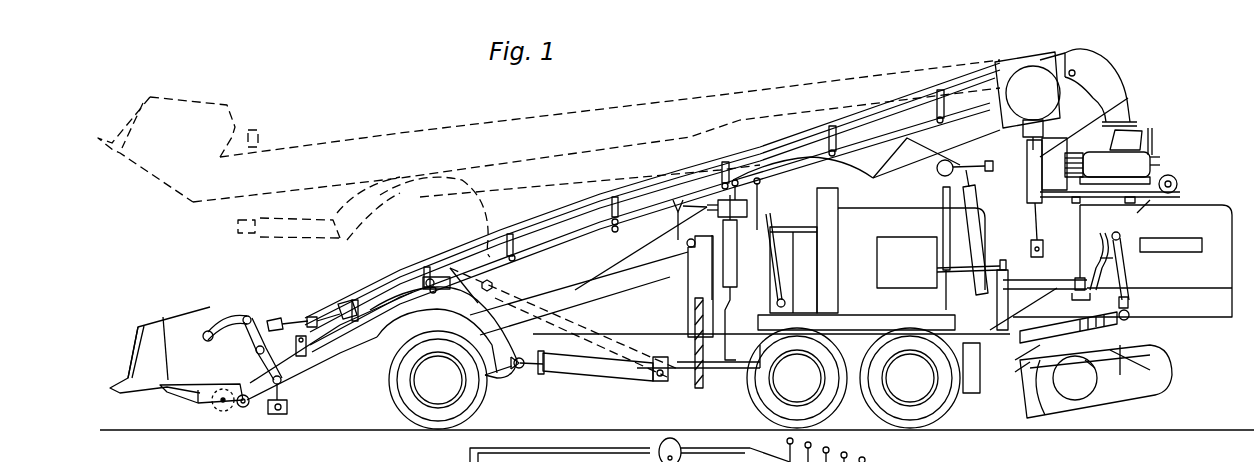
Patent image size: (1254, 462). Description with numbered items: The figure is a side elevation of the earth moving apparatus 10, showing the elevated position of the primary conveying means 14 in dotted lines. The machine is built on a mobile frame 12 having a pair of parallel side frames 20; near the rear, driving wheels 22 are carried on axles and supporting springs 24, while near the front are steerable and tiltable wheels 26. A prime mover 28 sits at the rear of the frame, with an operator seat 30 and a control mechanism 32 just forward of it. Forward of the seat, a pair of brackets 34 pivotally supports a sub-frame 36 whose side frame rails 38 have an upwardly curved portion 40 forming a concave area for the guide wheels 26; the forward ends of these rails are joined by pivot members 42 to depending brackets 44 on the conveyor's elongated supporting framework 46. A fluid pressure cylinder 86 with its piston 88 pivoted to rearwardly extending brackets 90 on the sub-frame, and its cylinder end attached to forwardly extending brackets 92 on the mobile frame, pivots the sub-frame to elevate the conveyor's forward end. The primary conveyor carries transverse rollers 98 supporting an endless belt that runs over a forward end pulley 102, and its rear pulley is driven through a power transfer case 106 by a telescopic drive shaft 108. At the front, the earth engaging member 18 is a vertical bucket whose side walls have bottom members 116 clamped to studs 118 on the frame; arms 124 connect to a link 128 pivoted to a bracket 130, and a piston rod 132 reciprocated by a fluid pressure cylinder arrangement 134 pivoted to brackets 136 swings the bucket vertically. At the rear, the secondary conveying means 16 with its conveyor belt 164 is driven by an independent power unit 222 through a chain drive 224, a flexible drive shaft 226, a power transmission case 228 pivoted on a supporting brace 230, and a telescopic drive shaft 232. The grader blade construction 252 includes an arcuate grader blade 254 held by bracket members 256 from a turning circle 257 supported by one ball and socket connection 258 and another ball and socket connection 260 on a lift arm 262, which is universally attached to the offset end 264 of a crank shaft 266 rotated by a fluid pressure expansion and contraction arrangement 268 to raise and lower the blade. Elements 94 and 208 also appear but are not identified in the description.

The earth moving apparatus 10 is at (590, 383).
The mobile frame 12 is at (738, 375).
The primary conveying means 14 is at (548, 212).
The secondary conveying means 16 is at (1158, 143).
The earth engaging member 18 is at (172, 310).
The side frames 20 is at (720, 360).
The driving wheels 22 is at (928, 412).
The supporting springs 24 is at (845, 366).
The steerable and tiltable wheels 26 is at (415, 413).
The prime mover 28 is at (850, 228).
The operator seat 30 is at (778, 245).
The control mechanism 32 is at (740, 240).
The brackets 34 is at (697, 236).
The sub-frame 36 is at (345, 360).
The side frame rails 38 is at (365, 348).
The upwardly curved portion 40 is at (383, 338).
The pivot members 42 is at (287, 414).
The depending brackets 44 is at (272, 416).
The supporting framework 46 is at (635, 247).
The fluid pressure cylinder 86 is at (630, 372).
The piston 88 is at (535, 376).
The rearwardly extending brackets 90 is at (516, 368).
The forwardly extending brackets 92 is at (665, 375).
The mounting plate 94 is at (694, 352).
The transverse rollers 98 is at (614, 222).
The forward end pulley 102 is at (218, 411).
The power transfer case 106 is at (1022, 75).
The telescopic drive shaft 108 is at (1118, 122).
The bottom members 116 is at (205, 398).
The studs 118 is at (242, 409).
The arms 124 is at (225, 328).
The link 128 is at (258, 332).
The bracket 130 is at (283, 405).
The piston rod 132 is at (318, 318).
The fluid pressure cylinder arrangement 134 is at (357, 305).
The brackets 136 is at (432, 279).
The conveyor belt 164 is at (1158, 162).
The discharge chute 208 is at (1110, 75).
The independent power unit 222 is at (1200, 203).
The chain drive 224 is at (960, 263).
The flexible drive shaft 226 is at (940, 232).
The power transmission case 228 is at (936, 173).
The supporting brace 230 is at (966, 215).
The drive shaft 232 is at (1021, 120).
The grader blade construction 252 is at (1175, 375).
The grader blade 254 is at (1060, 392).
The bracket members 256 is at (1085, 382).
The turning circle 257 is at (1025, 365).
The ball and socket connection 258 is at (1000, 372).
The ball and socket connection 260 is at (1130, 305).
The lift arm 262 is at (1128, 272).
The offset end 264 is at (1098, 240).
The crank shaft 266 is at (1062, 291).
The fluid pressure expansion and contraction arrangement 268 is at (940, 315).